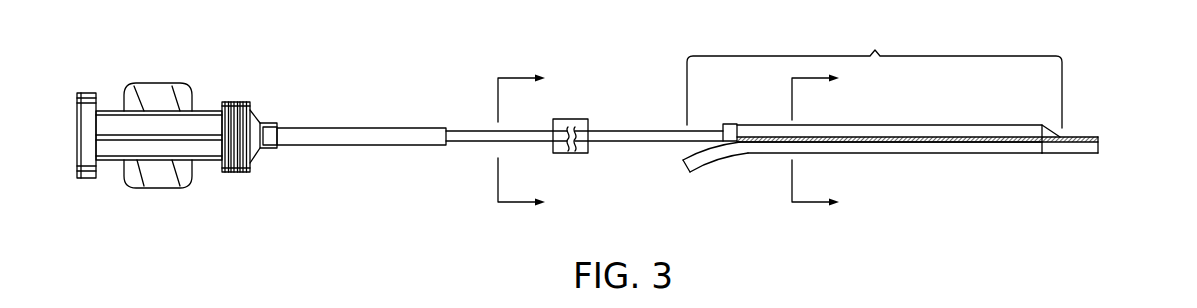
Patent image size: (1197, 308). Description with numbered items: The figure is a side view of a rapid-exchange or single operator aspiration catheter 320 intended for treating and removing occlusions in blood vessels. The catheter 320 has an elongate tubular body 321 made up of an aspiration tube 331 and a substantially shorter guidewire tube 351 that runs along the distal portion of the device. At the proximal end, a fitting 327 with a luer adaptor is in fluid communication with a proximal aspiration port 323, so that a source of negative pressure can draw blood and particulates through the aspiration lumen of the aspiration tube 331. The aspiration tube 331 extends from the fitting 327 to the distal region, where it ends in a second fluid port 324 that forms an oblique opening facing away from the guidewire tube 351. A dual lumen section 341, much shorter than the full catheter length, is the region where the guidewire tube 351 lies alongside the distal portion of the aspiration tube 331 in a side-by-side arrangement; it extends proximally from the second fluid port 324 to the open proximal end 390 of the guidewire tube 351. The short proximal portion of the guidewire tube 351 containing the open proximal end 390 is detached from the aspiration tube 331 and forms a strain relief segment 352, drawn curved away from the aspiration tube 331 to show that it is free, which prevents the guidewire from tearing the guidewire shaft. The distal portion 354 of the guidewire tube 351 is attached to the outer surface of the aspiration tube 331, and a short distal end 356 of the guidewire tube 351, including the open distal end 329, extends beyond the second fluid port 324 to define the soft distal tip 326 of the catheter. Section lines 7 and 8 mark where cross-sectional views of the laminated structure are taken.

The aspiration catheter 320 is at (620, 53).
The elongate tubular body 321 is at (649, 151).
The proximal aspiration port 323 is at (270, 133).
The second fluid port 324 is at (1057, 133).
The distal tip 326 is at (1080, 169).
The fitting 327 is at (170, 65).
The open distal end 329 is at (1100, 148).
The aspiration tube 331 is at (540, 143).
The dual lumen section 341 is at (874, 77).
The guidewire tube 351 is at (968, 147).
The strain relief segment 352 is at (708, 162).
The distal portion 354 is at (872, 155).
The distal end 356 is at (1072, 138).
The open proximal end 390 is at (686, 171).
The section line 7- 7 is at (529, 140).
The section line 8- 8 is at (823, 140).